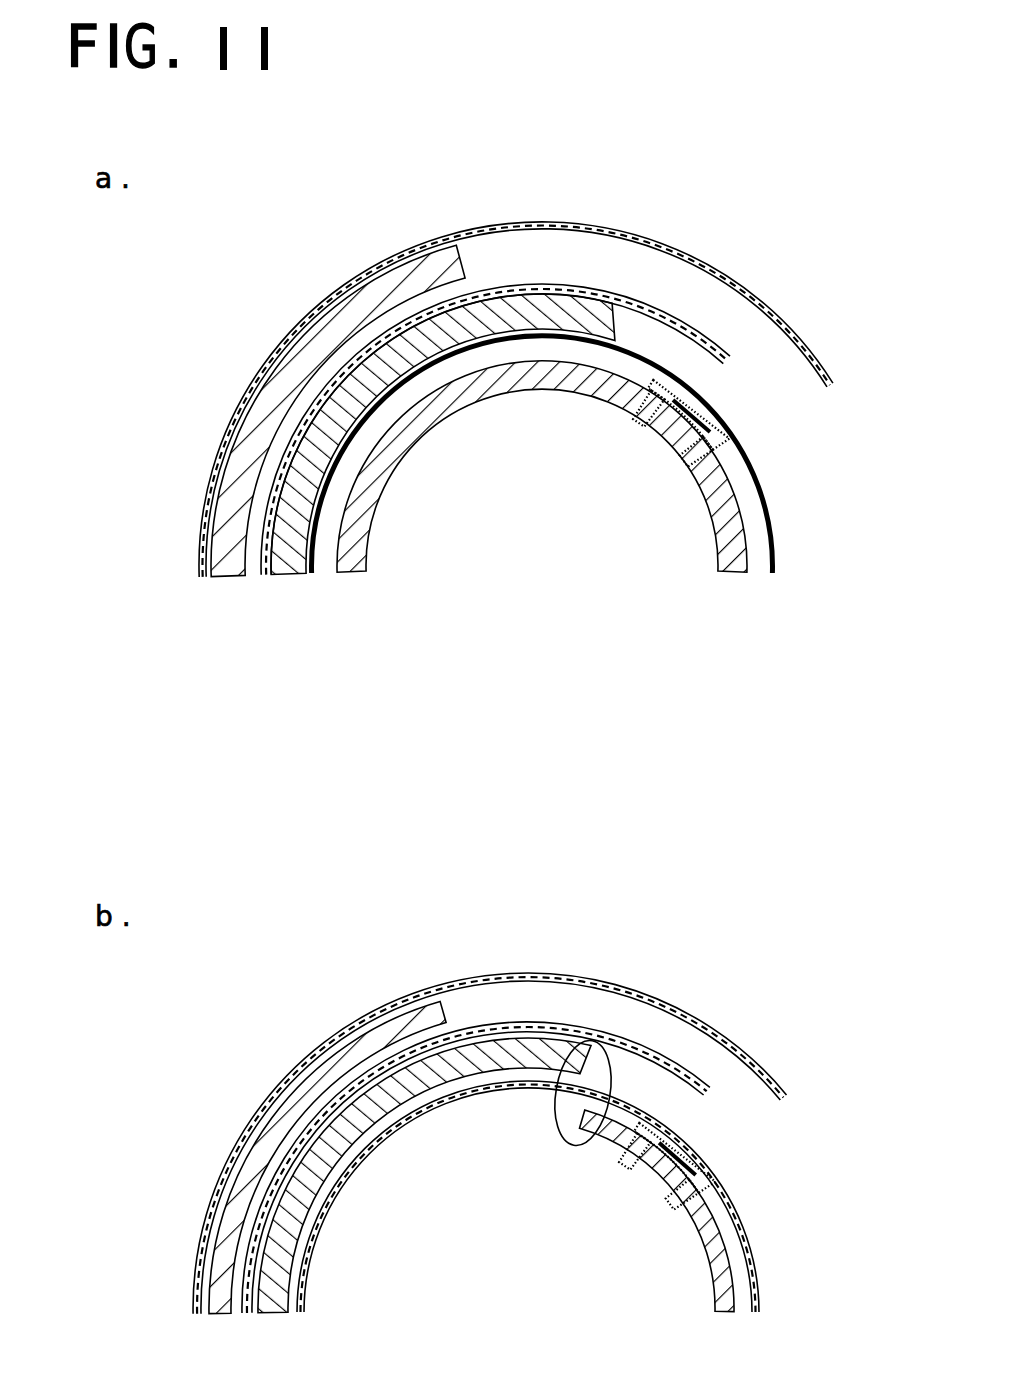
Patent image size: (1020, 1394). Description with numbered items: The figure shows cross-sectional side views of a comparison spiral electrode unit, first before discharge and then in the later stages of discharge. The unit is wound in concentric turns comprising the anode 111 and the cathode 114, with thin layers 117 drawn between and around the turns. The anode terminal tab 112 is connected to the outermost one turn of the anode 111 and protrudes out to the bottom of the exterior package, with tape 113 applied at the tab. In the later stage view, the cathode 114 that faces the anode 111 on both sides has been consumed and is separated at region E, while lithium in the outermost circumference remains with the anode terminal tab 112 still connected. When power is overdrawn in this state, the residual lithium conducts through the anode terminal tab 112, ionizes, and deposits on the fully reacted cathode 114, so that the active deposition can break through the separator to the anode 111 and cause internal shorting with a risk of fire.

The anode 111 is at (226, 510).
The anode terminal tab 112 is at (688, 467).
The tape 113 is at (652, 438).
The cathode 114 is at (562, 304).
The sheet 117 is at (215, 460).
The region E is at (585, 1042).